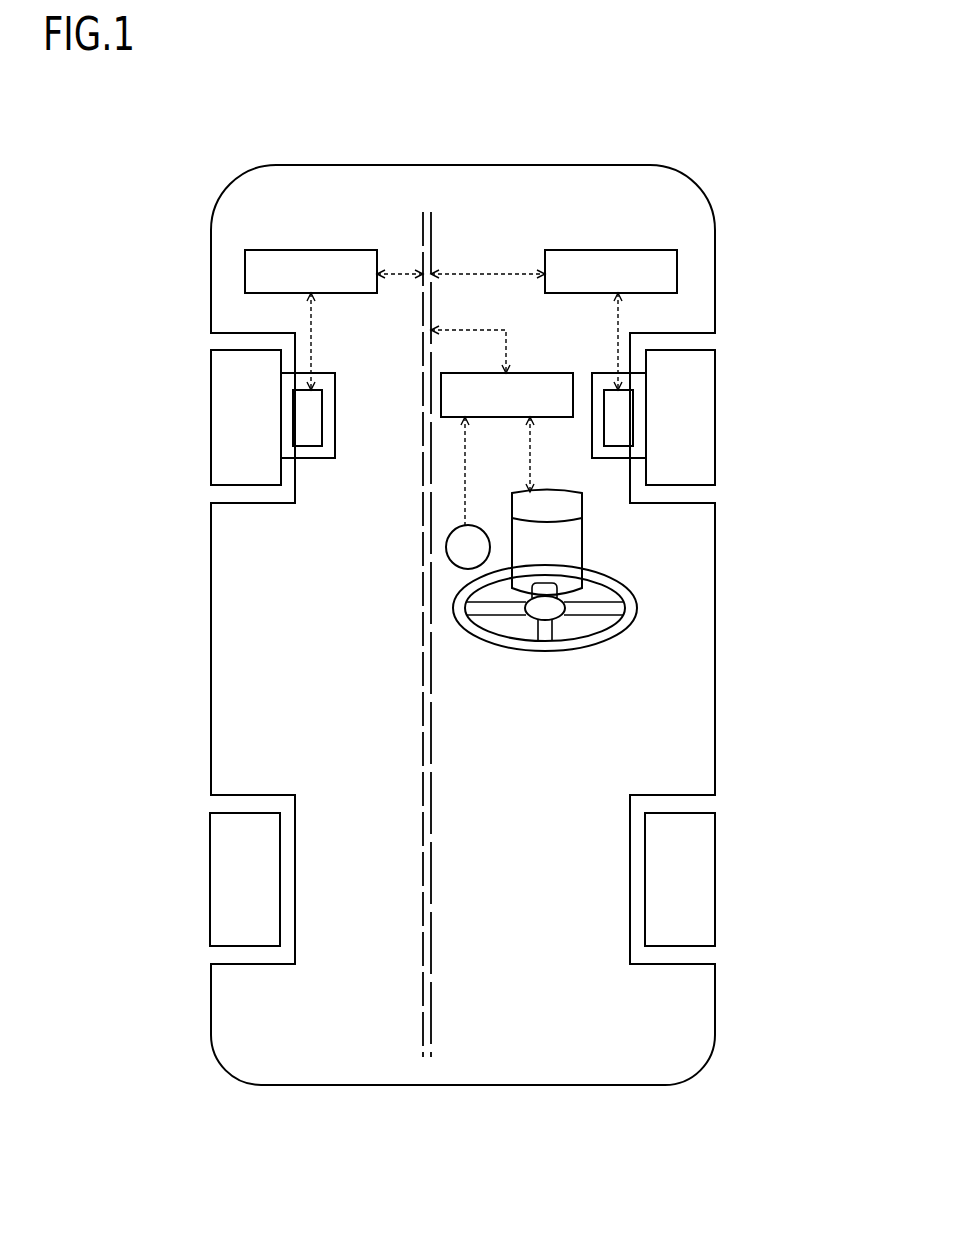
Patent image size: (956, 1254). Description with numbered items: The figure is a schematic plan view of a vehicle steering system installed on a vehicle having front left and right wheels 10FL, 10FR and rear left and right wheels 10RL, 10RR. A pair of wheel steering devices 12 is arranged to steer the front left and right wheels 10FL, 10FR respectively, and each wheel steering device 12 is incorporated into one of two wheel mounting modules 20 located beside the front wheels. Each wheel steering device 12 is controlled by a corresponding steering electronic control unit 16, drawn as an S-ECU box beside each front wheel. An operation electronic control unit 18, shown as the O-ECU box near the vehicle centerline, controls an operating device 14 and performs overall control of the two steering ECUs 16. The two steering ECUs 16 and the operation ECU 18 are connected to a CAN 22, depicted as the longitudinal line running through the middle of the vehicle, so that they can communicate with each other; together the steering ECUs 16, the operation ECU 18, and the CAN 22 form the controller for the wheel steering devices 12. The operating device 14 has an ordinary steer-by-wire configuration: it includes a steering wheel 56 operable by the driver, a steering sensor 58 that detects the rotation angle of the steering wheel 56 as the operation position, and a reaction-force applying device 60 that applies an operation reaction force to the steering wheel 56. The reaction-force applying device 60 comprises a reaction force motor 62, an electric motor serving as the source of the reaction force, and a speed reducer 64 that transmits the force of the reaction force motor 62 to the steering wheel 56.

The front left wheel 10FL is at (228, 376).
The front right wheel 10FR is at (698, 374).
The rear left wheel 10RL is at (231, 923).
The rear right wheel 10RR is at (695, 935).
The wheel steering device 12 is at (300, 414).
The operating device 14 is at (620, 574).
The steering electronic control unit 16 is at (245, 275).
The operation electronic control unit 18 is at (450, 392).
The wheel mounting module 20 is at (290, 450).
The CAN 22 is at (431, 905).
The steering wheel 56 is at (605, 637).
The steering sensor 58 is at (446, 547).
The reaction-force applying device 60 is at (640, 531).
The reaction force motor 62 is at (558, 500).
The speed reducer 64 is at (563, 551).